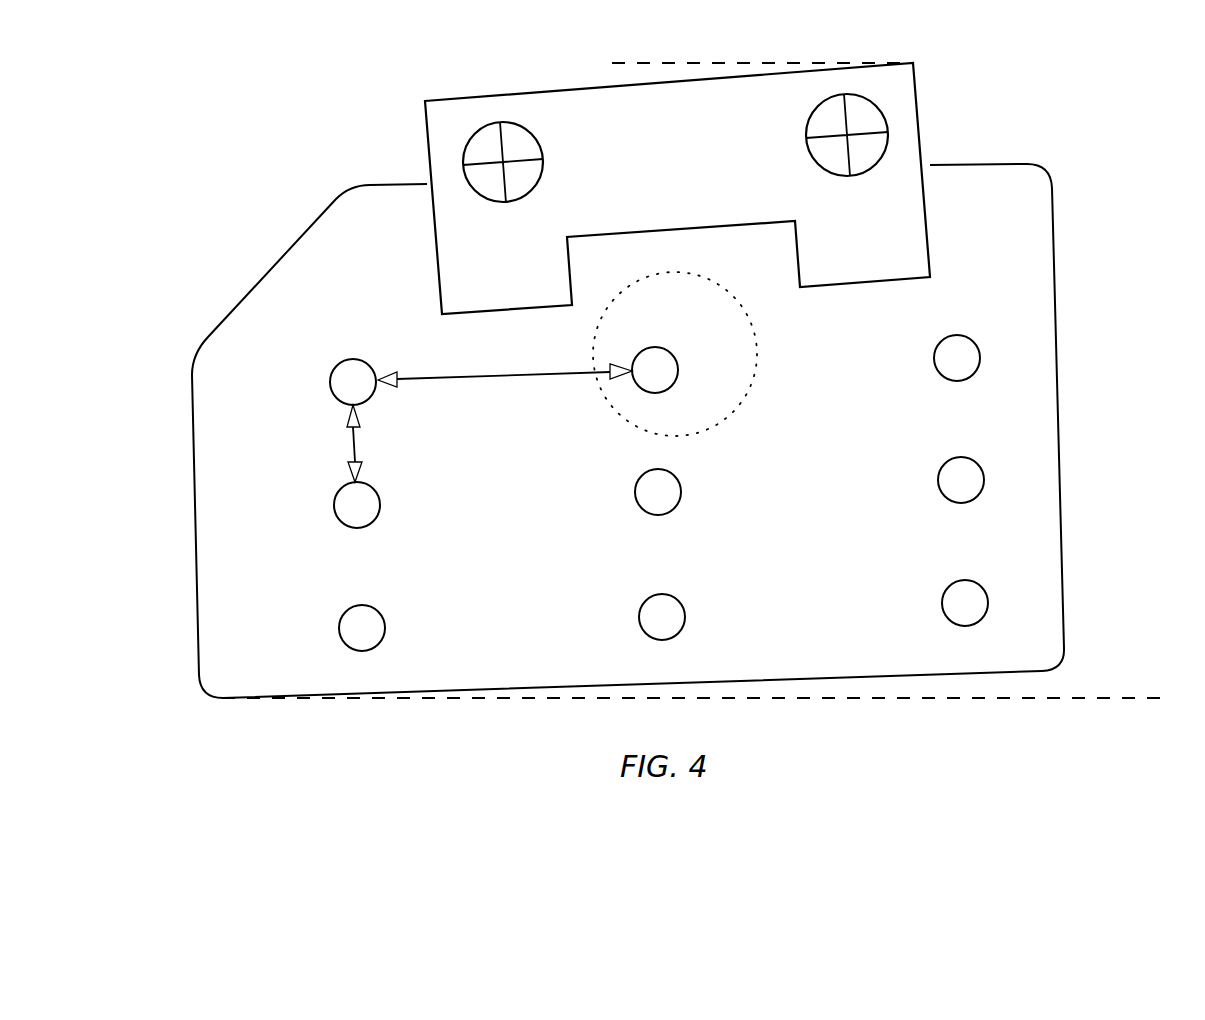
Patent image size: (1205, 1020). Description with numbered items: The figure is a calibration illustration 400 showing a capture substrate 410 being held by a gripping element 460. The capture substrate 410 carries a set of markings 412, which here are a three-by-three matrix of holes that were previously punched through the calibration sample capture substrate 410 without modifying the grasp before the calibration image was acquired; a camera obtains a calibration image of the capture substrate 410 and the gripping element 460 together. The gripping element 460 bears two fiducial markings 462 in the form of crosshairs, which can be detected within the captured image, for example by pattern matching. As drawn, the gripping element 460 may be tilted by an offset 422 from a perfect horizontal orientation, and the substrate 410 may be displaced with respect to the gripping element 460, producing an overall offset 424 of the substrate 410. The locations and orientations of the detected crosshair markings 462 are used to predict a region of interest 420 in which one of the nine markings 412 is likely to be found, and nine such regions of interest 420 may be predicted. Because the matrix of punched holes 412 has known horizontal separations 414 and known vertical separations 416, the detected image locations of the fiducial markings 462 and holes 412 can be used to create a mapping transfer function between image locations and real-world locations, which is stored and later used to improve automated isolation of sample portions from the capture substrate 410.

The illustration 400 is at (243, 128).
The capture substrate 410 is at (1075, 328).
The markings 412 is at (659, 493).
The horizontal separations 414 is at (490, 375).
The vertical separations 416 is at (353, 438).
The region of interest 420 is at (758, 357).
The offset 422 is at (678, 63).
The overall offset 424 is at (1107, 698).
The gripping element 460 is at (428, 168).
The fiducial markings 462 is at (547, 173).